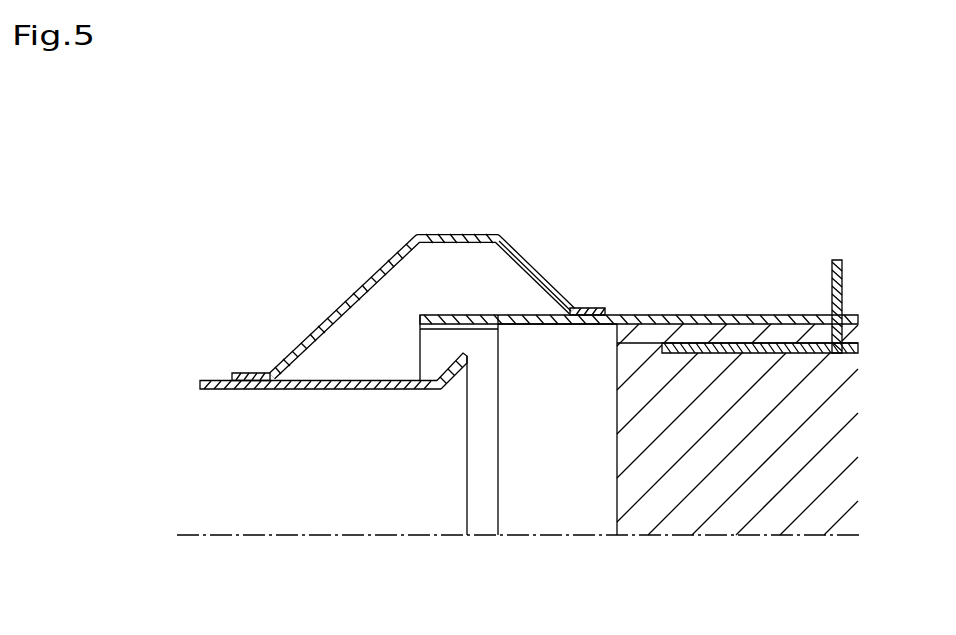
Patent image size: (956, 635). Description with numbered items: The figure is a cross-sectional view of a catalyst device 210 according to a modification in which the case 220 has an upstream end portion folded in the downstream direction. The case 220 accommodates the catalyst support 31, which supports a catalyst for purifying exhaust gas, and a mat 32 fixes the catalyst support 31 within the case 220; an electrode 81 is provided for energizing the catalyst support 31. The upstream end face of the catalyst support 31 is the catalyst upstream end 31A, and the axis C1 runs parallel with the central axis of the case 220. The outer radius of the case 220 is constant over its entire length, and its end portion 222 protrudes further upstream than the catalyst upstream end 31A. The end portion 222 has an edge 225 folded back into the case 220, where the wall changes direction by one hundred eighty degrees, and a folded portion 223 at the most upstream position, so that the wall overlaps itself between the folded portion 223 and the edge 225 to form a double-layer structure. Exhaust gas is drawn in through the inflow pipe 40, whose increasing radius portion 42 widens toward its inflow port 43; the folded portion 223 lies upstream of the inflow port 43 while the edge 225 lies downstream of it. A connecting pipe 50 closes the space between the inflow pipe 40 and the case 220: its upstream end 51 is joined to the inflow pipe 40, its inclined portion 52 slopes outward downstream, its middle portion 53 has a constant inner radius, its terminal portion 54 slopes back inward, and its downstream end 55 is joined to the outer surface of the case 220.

The catalyst device 210 is at (696, 177).
The inflow pipe 40 is at (363, 391).
The increasing radius portion 42 is at (456, 381).
The inflow port 43 is at (468, 425).
The connecting pipe 50 is at (357, 290).
The upstream end 51 is at (247, 372).
The inclined portion 52 is at (304, 336).
The middle portion 53 is at (447, 232).
The terminal portion 54 is at (540, 272).
The downstream end 55 is at (586, 306).
The case 220 is at (656, 313).
The end portion 222 is at (580, 326).
The folded portion 223 is at (418, 325).
The edge 225 is at (499, 346).
The catalyst support 31 is at (628, 497).
The catalyst upstream end 31A is at (616, 456).
The mat 32 is at (777, 331).
The electrode 81 is at (835, 259).
The axis C1 is at (263, 540).